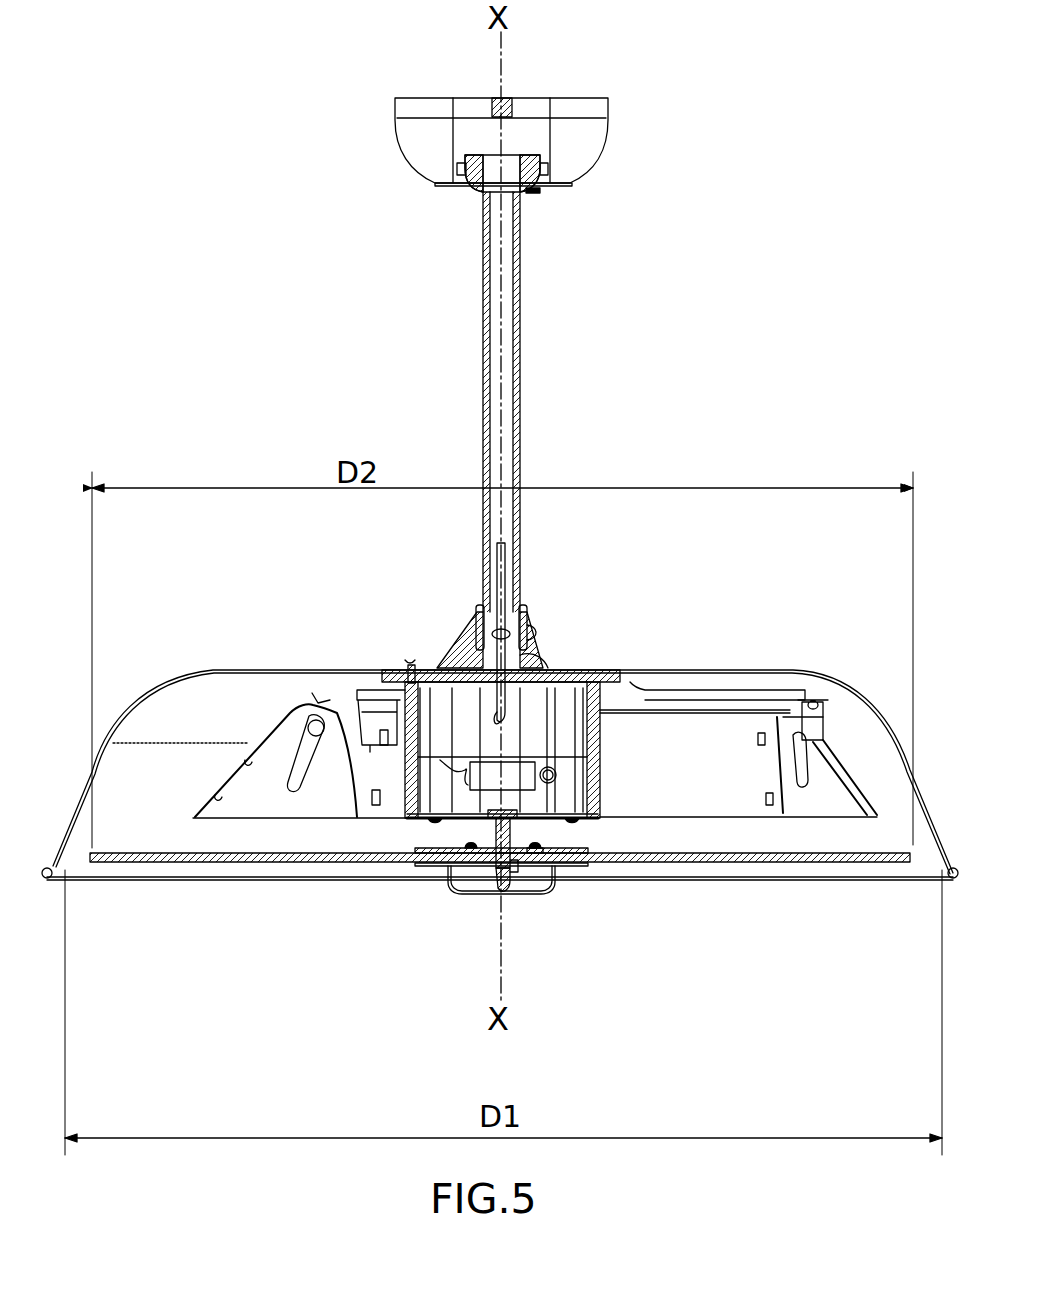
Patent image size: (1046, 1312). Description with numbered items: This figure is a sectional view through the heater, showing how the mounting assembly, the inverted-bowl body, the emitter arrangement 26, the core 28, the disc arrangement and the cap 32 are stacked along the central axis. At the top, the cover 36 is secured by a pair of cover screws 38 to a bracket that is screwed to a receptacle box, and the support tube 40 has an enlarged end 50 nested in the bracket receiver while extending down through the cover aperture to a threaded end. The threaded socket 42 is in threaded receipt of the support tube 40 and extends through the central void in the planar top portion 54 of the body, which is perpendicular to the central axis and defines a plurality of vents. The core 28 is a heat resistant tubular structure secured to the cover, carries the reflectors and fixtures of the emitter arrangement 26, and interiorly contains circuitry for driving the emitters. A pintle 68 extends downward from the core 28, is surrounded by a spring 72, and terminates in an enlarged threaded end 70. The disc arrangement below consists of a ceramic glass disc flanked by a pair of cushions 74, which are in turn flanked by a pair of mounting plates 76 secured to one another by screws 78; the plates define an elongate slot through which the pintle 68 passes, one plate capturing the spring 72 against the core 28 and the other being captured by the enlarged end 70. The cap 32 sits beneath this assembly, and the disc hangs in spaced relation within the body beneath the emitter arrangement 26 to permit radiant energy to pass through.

The emitter arrangement 26 is at (785, 872).
The core 28 is at (595, 836).
The cap 32 is at (550, 896).
The cover 36 is at (607, 147).
The cover screws 38 is at (533, 188).
The support tube 40 is at (523, 397).
The socket 42 is at (530, 656).
The enlarged end 50 is at (476, 165).
The planar top portion 54 is at (292, 668).
The pintle 68 is at (495, 842).
The enlarged threaded end 70 is at (488, 872).
The spring 72 is at (493, 833).
The cushions 74 is at (418, 863).
The mounting plates 76 is at (426, 866).
The screws 78 is at (535, 841).